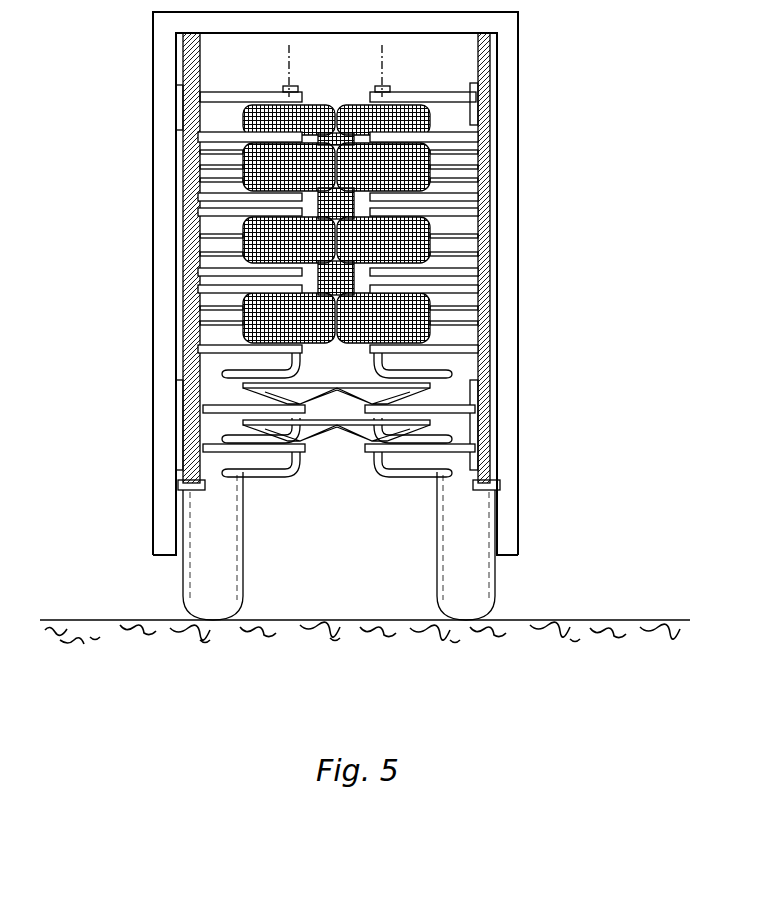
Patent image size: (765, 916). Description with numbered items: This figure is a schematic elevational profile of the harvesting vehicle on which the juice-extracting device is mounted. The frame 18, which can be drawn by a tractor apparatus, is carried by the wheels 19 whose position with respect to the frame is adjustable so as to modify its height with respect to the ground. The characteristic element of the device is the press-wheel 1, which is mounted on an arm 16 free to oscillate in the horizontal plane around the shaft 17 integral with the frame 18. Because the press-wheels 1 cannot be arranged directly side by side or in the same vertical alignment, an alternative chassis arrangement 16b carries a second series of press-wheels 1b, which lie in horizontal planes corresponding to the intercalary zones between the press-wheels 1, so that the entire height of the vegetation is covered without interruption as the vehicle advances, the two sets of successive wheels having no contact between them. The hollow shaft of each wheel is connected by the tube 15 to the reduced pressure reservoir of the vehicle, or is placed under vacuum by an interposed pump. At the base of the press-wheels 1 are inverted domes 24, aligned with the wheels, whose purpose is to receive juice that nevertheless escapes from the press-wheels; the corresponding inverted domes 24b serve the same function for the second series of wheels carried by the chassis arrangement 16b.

The wheel 1 is at (200, 153).
The press-wheel 1b is at (313, 113).
The tube 15 is at (257, 372).
The arm 16 is at (458, 137).
The alternative chassis arrangement 16b is at (420, 93).
The shaft 17 is at (487, 60).
The frame 18 is at (162, 90).
The wheels 19 is at (448, 553).
The inverted dome 24 is at (307, 440).
The inverted dome 24b is at (430, 392).